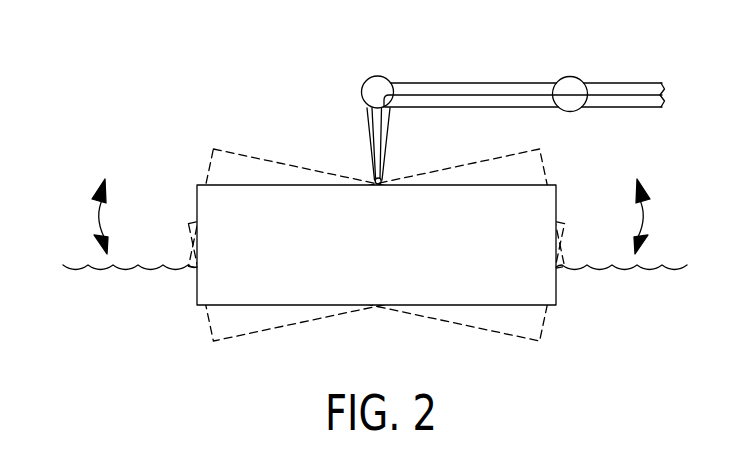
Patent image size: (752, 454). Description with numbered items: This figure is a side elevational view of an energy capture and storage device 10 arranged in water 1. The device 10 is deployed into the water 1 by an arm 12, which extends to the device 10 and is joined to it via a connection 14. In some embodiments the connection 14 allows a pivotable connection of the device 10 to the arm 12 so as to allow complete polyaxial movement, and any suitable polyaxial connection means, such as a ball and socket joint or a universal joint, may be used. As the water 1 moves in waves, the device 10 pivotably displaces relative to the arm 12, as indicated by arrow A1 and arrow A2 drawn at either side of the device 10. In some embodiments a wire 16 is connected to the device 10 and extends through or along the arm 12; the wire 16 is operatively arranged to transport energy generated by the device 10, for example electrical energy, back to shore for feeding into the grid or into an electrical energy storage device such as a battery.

The water 1 is at (126, 284).
The device 10 is at (197, 201).
The arm 12 is at (510, 83).
The connection 14 is at (369, 181).
The wire 16 is at (438, 88).
The arrow A1 is at (97, 213).
The arrow A2 is at (645, 217).